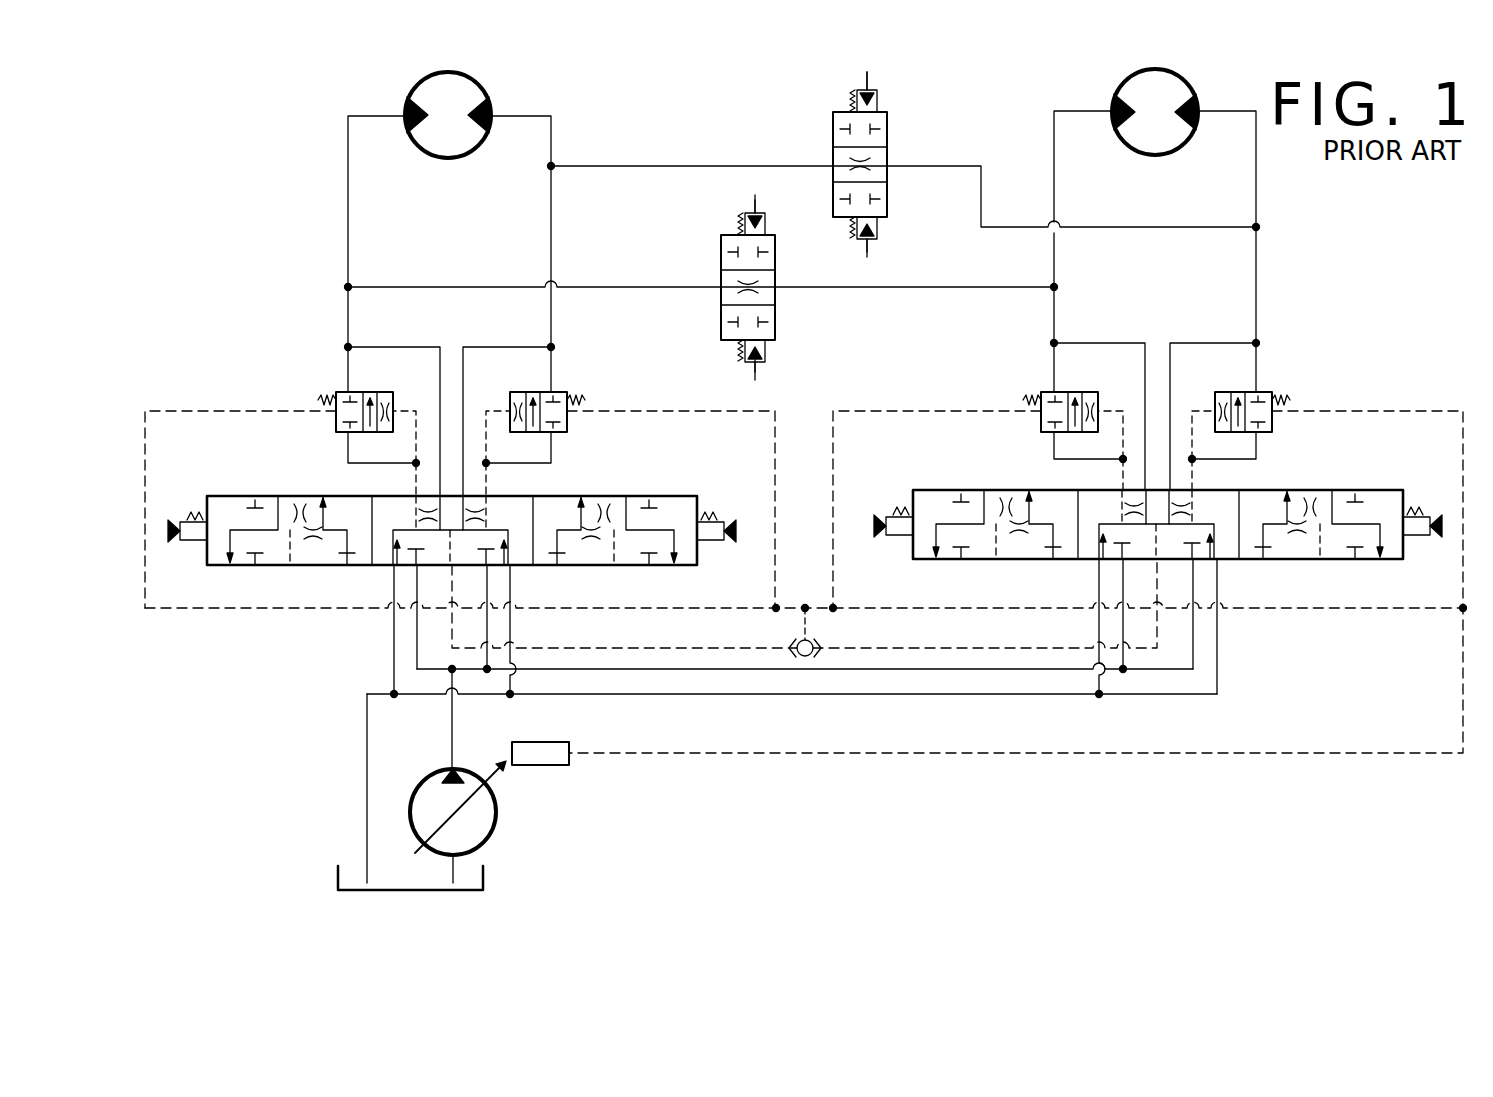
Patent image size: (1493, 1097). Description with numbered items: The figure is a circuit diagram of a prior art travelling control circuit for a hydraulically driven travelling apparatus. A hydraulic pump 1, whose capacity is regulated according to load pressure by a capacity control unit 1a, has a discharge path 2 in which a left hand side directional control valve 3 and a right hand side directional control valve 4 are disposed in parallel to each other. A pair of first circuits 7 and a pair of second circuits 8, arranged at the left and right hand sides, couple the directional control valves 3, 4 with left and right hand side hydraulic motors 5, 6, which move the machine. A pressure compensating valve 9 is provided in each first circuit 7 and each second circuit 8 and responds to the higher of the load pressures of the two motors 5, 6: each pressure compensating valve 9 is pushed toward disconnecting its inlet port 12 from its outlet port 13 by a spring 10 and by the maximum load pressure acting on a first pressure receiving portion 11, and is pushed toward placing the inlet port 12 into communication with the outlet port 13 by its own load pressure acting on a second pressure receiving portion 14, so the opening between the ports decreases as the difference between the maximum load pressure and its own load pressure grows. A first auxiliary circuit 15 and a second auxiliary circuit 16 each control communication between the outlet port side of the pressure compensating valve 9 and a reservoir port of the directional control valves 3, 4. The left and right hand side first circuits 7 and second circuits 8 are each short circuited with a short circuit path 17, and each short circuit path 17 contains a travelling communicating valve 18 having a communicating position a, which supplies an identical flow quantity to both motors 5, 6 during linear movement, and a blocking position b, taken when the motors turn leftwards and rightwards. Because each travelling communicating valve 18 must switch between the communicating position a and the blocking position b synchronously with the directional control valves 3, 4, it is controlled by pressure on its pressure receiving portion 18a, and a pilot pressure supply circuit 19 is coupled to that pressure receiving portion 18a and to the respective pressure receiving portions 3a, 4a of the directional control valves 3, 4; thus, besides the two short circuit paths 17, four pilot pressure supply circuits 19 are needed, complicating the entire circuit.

The hydraulic pump 1 is at (523, 798).
The capacity control unit 1a is at (560, 766).
The discharge path 2 is at (452, 720).
The left hand side directional control valve 3 is at (453, 503).
The pressure receiving portion of left hand side directional control valve 3a is at (168, 515).
The right hand side directional control valve 4 is at (1150, 492).
The pressure receiving portion of right hand side directional control valve 4a is at (872, 512).
The left hand side hydraulic motor 5 is at (483, 92).
The right hand side hydraulic motor 6 is at (1190, 90).
The first circuit 7 is at (348, 205).
The second circuit 8 is at (551, 218).
The pressure compensating valve 9 is at (787, 380).
The spring 10 is at (318, 400).
The first pressure receiving portion 11 is at (336, 411).
The inlet port 12 is at (348, 440).
The outlet port 13 is at (342, 392).
The second pressure receiving portion 14 is at (400, 396).
The first auxiliary circuit 15 is at (385, 345).
The second auxiliary circuit 16 is at (483, 345).
The short circuit path 17 is at (925, 290).
The travelling communicating valve 18 is at (809, 227).
The pressure receiving portion of travelling communicating valve 18a is at (855, 95).
The pilot pressure supply circuit 19 is at (805, 410).
The communicating position a is at (833, 160).
The blocking position b is at (833, 130).